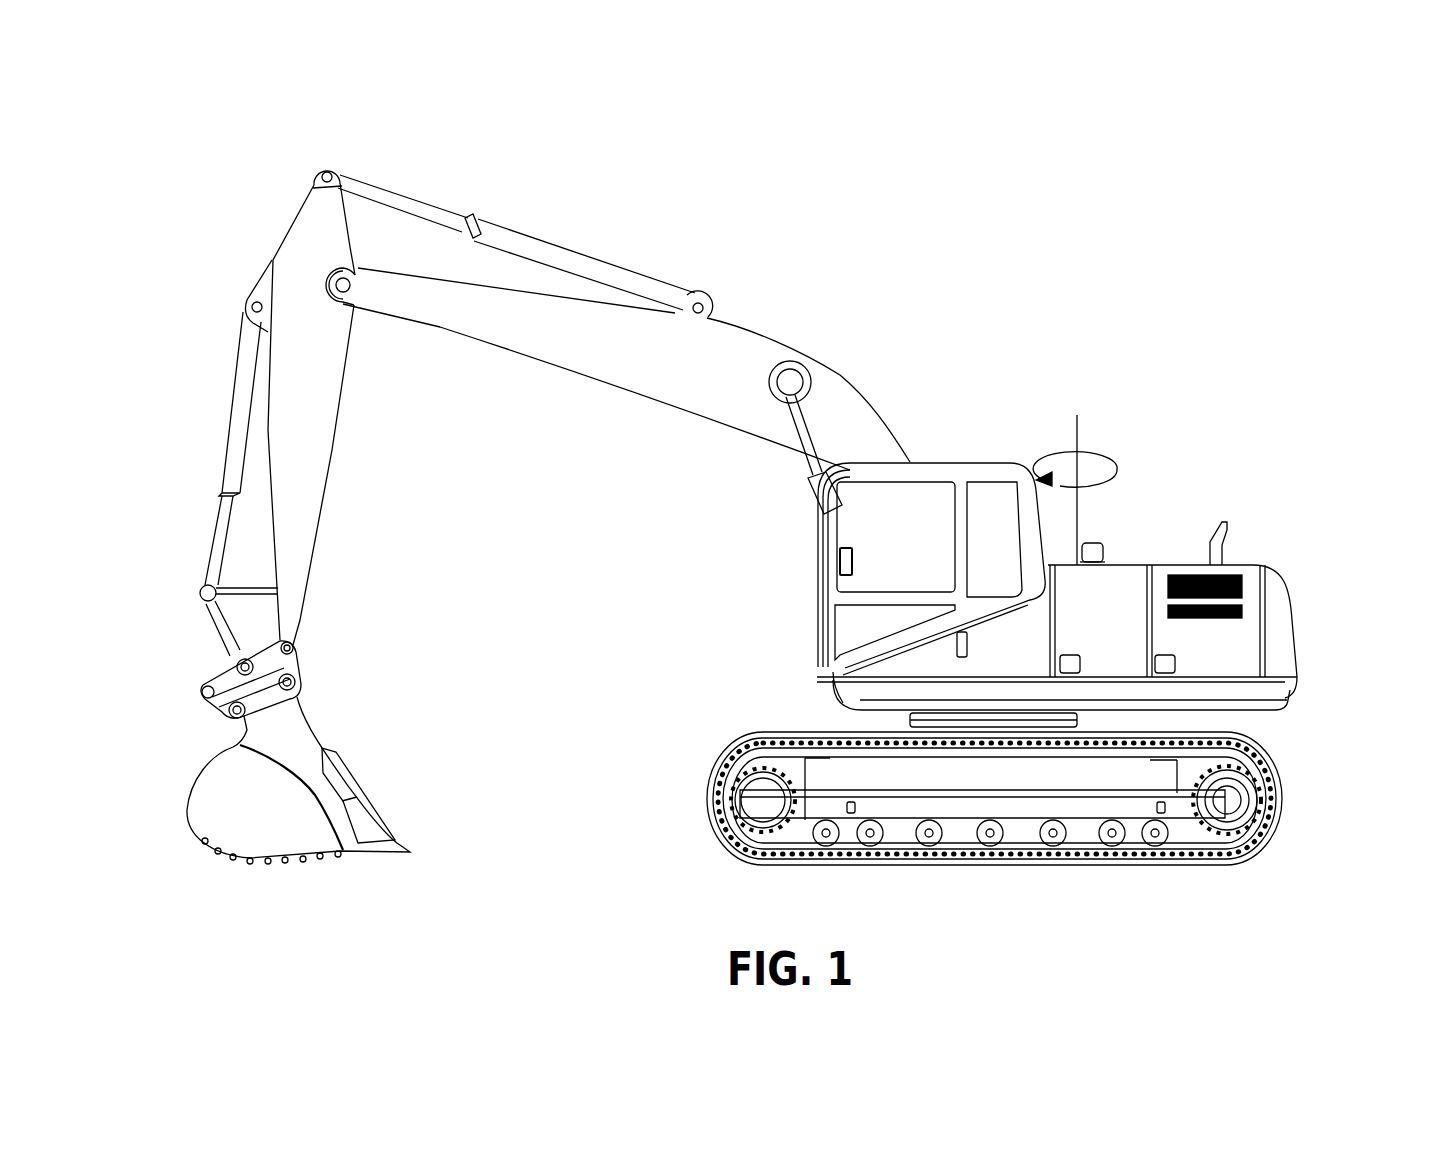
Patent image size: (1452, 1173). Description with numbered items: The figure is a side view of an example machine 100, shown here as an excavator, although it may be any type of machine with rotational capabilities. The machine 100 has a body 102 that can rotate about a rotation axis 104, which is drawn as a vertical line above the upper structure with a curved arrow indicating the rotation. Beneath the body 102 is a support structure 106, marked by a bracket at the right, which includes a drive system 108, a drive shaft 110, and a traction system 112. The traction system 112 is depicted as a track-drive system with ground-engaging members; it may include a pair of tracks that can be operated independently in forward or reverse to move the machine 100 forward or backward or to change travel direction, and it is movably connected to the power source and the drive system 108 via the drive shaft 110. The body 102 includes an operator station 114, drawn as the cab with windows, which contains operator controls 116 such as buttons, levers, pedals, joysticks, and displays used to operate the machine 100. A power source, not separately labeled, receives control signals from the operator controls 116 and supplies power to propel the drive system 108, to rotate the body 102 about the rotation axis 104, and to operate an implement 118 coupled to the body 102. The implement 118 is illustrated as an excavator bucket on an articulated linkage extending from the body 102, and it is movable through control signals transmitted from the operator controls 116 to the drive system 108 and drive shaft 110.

The machine 100 is at (258, 91).
The body 102 is at (997, 463).
The rotation axis 104 is at (1077, 432).
The support structure 106 is at (1338, 720).
The drive system 108 is at (1052, 807).
The drive shaft 110 is at (785, 810).
The traction system 112 is at (730, 753).
The operator station 114 is at (950, 462).
The operator controls 116 is at (840, 562).
The implement 118 is at (318, 544).